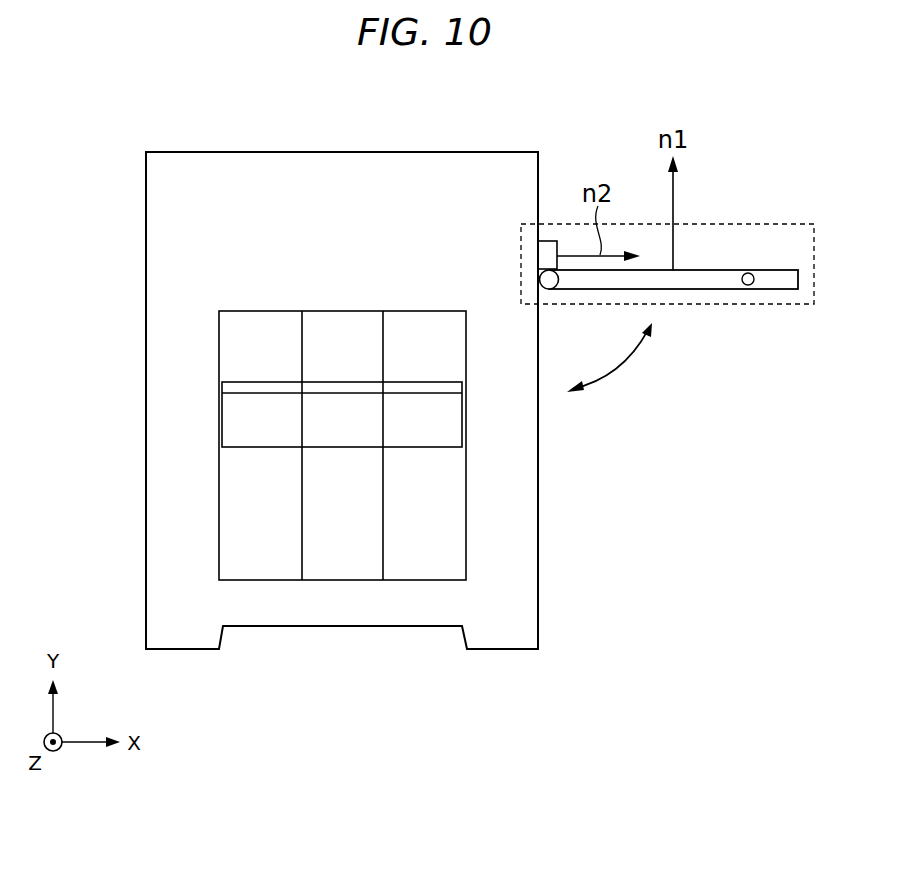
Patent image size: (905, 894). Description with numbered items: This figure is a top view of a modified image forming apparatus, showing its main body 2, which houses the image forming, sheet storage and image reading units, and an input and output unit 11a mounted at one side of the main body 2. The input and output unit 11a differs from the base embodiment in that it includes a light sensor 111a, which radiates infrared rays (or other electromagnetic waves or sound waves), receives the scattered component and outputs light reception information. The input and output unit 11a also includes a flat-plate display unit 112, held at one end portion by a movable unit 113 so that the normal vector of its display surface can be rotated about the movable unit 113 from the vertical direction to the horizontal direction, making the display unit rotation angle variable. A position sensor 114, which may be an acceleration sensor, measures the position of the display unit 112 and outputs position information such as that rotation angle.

The main body 2 is at (343, 152).
The input and output unit 11a is at (730, 226).
The light sensor 111a is at (548, 256).
The display unit 112 is at (695, 290).
The movable unit 113 is at (545, 279).
The position sensor 114 is at (748, 286).